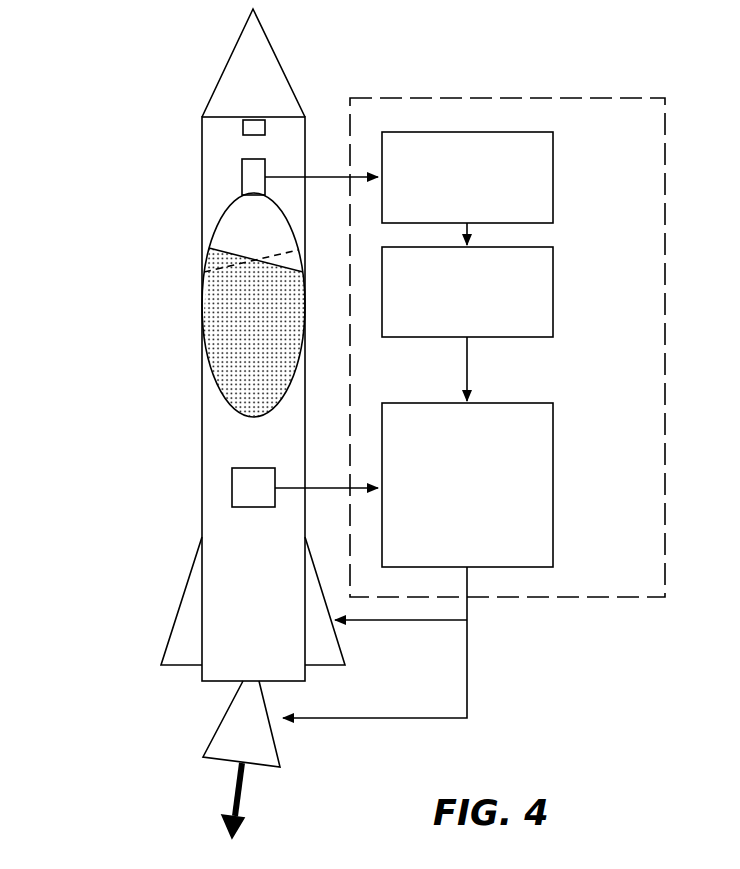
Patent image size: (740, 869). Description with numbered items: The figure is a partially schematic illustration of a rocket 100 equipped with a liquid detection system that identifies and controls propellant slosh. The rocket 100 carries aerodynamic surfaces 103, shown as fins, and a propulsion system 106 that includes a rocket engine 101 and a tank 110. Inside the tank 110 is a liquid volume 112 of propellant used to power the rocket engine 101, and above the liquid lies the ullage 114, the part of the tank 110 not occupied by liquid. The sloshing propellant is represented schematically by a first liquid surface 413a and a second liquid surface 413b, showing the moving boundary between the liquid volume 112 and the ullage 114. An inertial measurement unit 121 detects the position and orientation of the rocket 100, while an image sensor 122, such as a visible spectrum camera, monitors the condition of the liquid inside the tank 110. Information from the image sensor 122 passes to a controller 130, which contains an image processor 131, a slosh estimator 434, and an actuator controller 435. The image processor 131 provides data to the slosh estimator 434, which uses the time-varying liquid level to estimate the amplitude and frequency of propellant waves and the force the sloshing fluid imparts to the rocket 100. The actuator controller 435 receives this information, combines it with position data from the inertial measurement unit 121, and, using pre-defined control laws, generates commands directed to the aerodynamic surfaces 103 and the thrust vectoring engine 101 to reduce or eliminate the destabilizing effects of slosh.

The rocket 100 is at (97, 222).
The rocket engine 101 is at (172, 681).
The aerodynamic surfaces 103 is at (130, 596).
The propulsion system 106 is at (202, 717).
The tank 110 is at (225, 402).
The liquid volume 112 is at (215, 340).
The ullage 114 is at (273, 237).
The inertial measurement unit 121 is at (243, 126).
The image sensor 122 is at (242, 177).
The controller 130 is at (623, 98).
The image processor 131 is at (553, 175).
The first liquid surface 413a is at (212, 245).
The second liquid surface 413b is at (205, 272).
The slosh estimator 434 is at (553, 287).
The actuator controller 435 is at (553, 445).